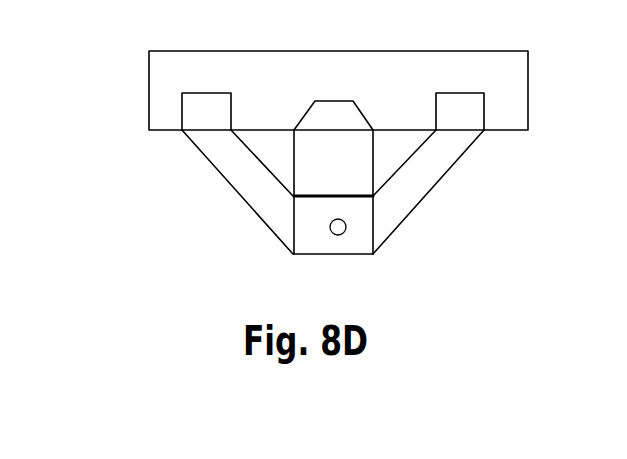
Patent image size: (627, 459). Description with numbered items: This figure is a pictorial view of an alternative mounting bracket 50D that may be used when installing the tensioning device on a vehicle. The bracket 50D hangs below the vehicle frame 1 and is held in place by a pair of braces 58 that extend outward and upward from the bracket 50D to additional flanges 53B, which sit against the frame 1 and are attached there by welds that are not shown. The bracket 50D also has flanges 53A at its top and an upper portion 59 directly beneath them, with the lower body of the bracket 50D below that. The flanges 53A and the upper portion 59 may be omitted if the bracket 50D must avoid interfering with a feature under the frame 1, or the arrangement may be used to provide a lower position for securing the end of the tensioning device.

The vehicle frame 1 is at (528, 130).
The flanges 53A is at (332, 101).
The additional flanges 53B is at (212, 80).
The braces 58 is at (210, 162).
The upper portion 59 is at (303, 167).
The bracket 50D is at (360, 245).